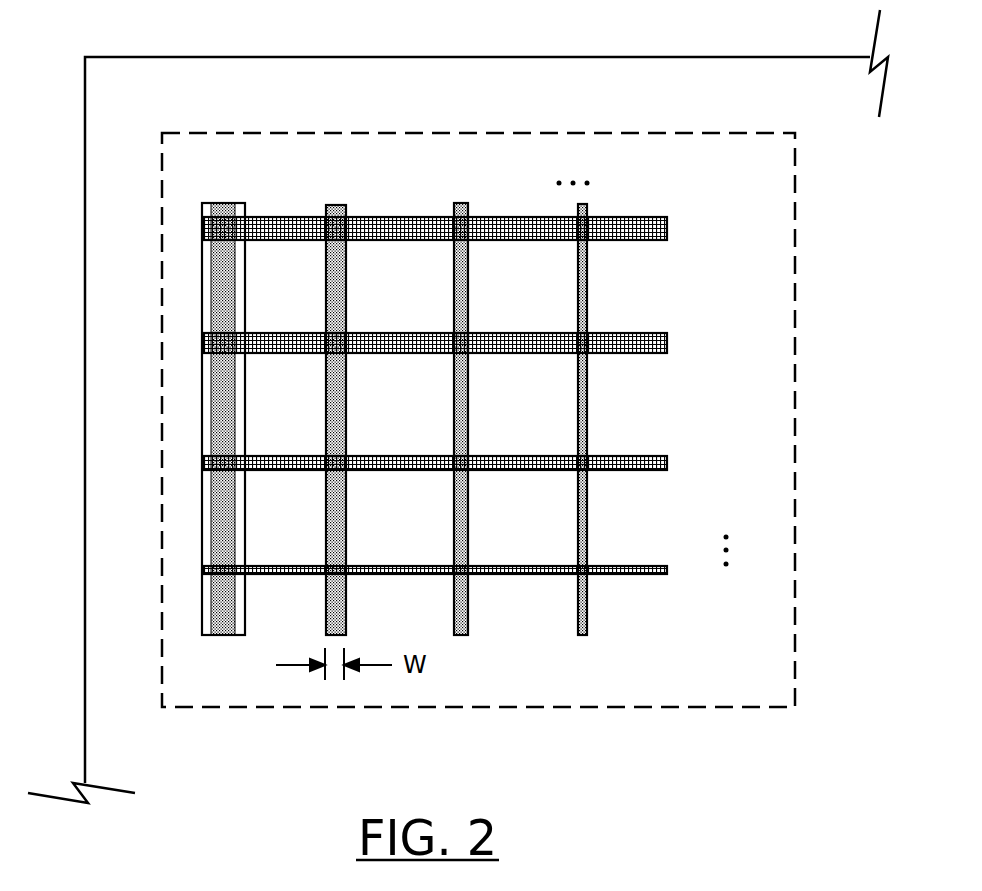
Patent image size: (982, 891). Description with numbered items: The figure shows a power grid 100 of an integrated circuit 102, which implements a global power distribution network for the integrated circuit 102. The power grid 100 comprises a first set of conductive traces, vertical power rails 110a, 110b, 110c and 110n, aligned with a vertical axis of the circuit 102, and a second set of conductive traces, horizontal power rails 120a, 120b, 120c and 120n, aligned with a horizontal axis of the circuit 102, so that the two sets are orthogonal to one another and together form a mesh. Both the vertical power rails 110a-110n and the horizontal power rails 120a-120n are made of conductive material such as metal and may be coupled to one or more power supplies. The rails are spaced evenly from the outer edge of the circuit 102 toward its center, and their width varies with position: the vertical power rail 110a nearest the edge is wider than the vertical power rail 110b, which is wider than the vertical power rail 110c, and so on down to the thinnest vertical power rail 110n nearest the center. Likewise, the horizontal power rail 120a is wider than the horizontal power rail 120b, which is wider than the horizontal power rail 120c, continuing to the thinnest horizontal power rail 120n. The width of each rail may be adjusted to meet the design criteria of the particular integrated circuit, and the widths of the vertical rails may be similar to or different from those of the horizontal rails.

The integrated circuit 102 is at (170, 56).
The power grid 100 is at (250, 134).
The vertical power rail 110a is at (220, 203).
The vertical power rail 110b is at (334, 205).
The vertical power rail 110c is at (460, 203).
The vertical power rail 110n is at (583, 204).
The horizontal power rail 120a is at (668, 228).
The horizontal power rail 120b is at (668, 342).
The horizontal power rail 120c is at (668, 462).
The horizontal power rail 120n is at (668, 570).